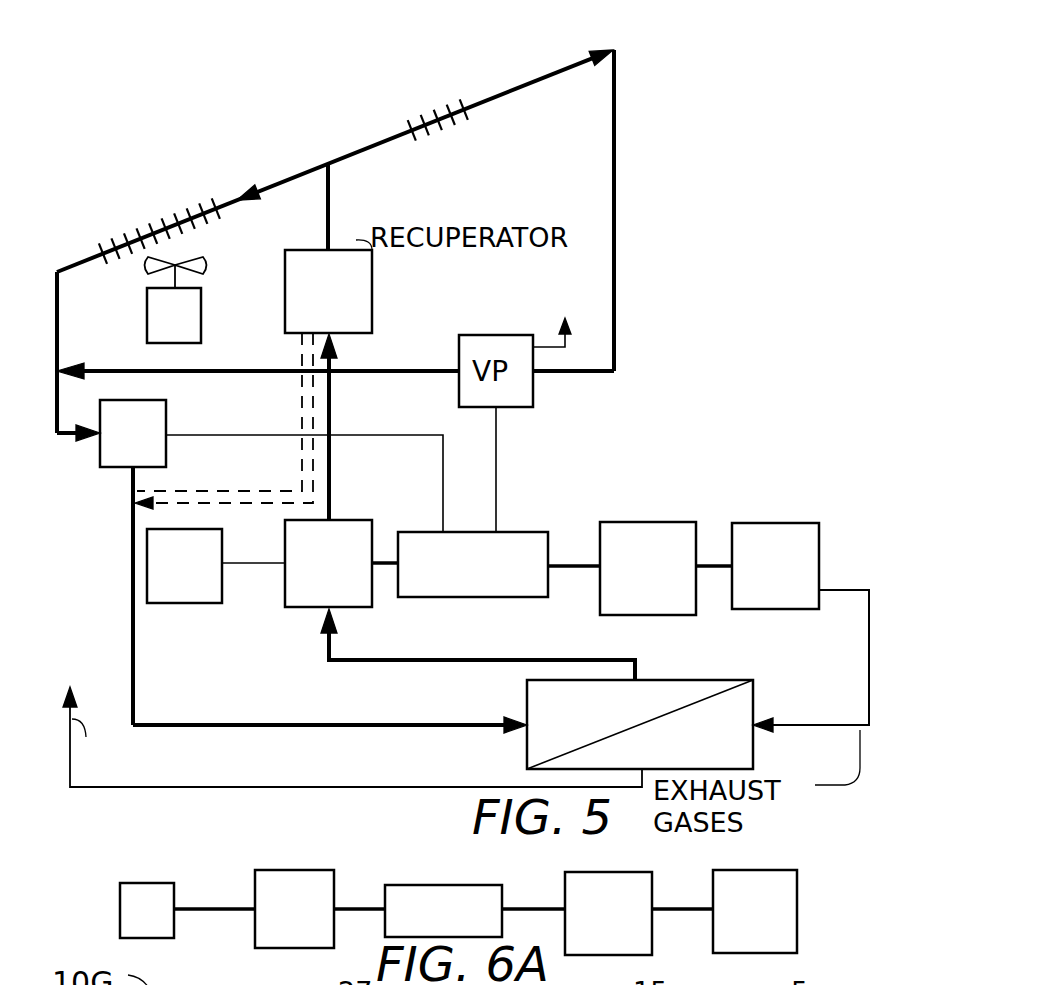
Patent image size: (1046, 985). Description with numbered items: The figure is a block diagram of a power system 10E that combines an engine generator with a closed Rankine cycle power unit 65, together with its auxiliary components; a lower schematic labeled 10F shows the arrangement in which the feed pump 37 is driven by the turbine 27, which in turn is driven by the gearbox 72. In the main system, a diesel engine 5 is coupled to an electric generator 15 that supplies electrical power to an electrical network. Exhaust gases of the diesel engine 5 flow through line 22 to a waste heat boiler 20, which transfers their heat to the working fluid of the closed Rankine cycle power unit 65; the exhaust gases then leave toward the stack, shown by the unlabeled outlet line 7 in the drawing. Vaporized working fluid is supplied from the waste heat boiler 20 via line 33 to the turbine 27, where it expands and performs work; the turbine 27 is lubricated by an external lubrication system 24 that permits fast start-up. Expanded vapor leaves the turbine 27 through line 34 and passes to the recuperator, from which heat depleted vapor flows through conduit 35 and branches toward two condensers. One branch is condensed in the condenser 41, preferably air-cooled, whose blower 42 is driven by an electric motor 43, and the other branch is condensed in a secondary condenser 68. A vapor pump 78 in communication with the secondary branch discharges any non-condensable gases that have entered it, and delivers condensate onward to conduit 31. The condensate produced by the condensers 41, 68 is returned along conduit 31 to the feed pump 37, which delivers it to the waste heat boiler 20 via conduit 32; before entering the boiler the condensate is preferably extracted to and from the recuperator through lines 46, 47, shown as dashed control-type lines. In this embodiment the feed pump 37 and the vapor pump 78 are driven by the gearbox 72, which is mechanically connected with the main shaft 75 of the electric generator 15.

In FIG. 5, the power system 10E is at (146, 183).
In FIG. 6A, the power generation system (sixth embodiment) 10F is at (150, 855).
In FIG. 5, the closed Rankine cycle power unit 65 is at (118, 232).
In FIG. 5, the condenser 41 is at (188, 212).
In FIG. 5, the secondary condenser 68 is at (440, 122).
In FIG. 5, the conduit 31 is at (57, 310).
In FIG. 5, the conduit 35 is at (331, 173).
In FIG. 5, the blower 42 is at (143, 267).
In FIG. 5, the electric motor 43 is at (147, 318).
In FIG. 5, the feed pump 37 is at (148, 404).
In FIG. 6A, the feed pump 37 is at (157, 883).
In FIG. 5, the vapor pump 78 is at (505, 345).
In FIG. 5, the line 46 is at (287, 448).
In FIG. 5, the line 47 is at (244, 506).
In FIG. 5, the line 34 is at (342, 446).
In FIG. 5, the external lubrication system 24 is at (228, 538).
In FIG. 5, the turbine 27 is at (375, 523).
In FIG. 6A, the turbine 27 is at (325, 883).
In FIG. 5, the gearbox 72 is at (517, 532).
In FIG. 6A, the gearbox 72 is at (468, 885).
In FIG. 5, the main shaft 75 is at (560, 546).
In FIG. 5, the electric generator 15 is at (668, 522).
In FIG. 6A, the electric generator 15 is at (620, 872).
In FIG. 5, the diesel engine 5 is at (795, 523).
In FIG. 6A, the diesel engine 5 is at (778, 870).
In FIG. 5, the waste heat boiler 20 is at (745, 680).
In FIG. 5, the line 22 is at (868, 631).
In FIG. 5, the line 33 is at (510, 660).
In FIG. 5, the conduit 32 is at (135, 642).
In FIG. 5, the exhaust line to stack 7 is at (275, 787).